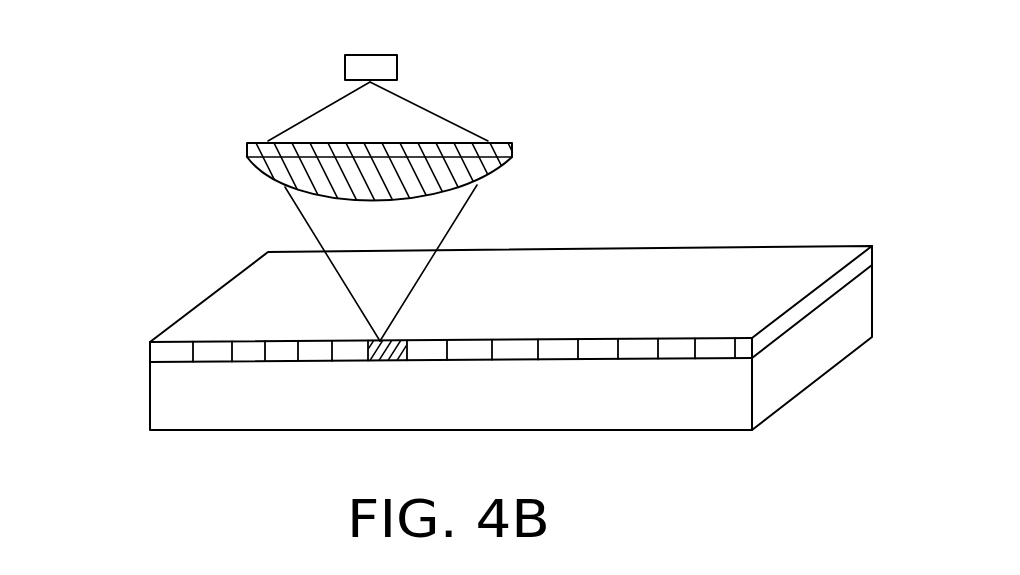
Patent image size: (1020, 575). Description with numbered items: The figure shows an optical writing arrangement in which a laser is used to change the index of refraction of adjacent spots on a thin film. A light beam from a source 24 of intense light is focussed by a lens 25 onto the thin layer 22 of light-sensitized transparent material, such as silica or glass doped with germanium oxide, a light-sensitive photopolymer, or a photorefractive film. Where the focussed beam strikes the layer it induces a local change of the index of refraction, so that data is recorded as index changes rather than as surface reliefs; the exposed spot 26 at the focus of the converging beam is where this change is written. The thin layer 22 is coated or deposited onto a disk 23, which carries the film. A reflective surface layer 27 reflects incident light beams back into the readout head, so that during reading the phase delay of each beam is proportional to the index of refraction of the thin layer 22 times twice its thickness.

The thin layer 22 is at (637, 350).
The disk 23 is at (717, 417).
The source 24 is at (352, 66).
The lens 25 is at (500, 168).
The irradiated region 26 is at (405, 340).
The reflective surface layer 27 is at (148, 358).